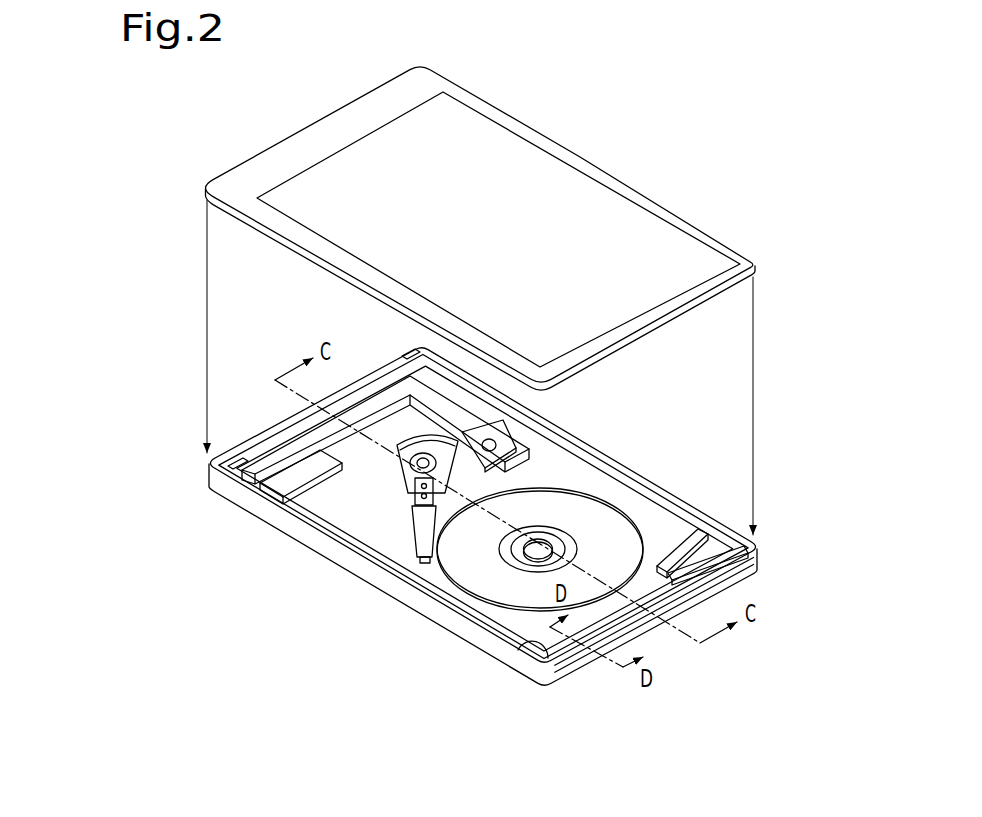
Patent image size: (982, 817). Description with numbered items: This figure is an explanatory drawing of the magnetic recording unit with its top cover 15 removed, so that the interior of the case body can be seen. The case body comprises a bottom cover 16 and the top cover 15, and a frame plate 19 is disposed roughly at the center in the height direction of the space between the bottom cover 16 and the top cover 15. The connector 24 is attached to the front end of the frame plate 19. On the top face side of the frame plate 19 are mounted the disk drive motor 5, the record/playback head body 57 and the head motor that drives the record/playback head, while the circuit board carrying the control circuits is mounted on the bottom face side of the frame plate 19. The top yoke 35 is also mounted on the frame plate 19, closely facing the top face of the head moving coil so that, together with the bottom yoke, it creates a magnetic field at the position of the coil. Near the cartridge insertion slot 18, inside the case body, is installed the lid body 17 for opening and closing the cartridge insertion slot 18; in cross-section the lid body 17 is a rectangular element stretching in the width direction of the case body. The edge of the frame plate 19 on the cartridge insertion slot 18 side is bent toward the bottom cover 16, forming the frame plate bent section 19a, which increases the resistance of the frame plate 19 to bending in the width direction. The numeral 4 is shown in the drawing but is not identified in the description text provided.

The upper case (cover) 4 is at (672, 180).
The top cover 15 is at (237, 183).
The bottom cover 16 is at (232, 493).
The disk drive motor 5 is at (465, 600).
The frame plate 19 is at (573, 482).
The frame plate bent section 19a is at (530, 648).
The cartridge insertion slot 18 is at (580, 658).
The lid body 17 is at (636, 638).
The connector 24 is at (397, 369).
The top yoke 35 is at (418, 428).
The record/playback head body 57 is at (398, 500).